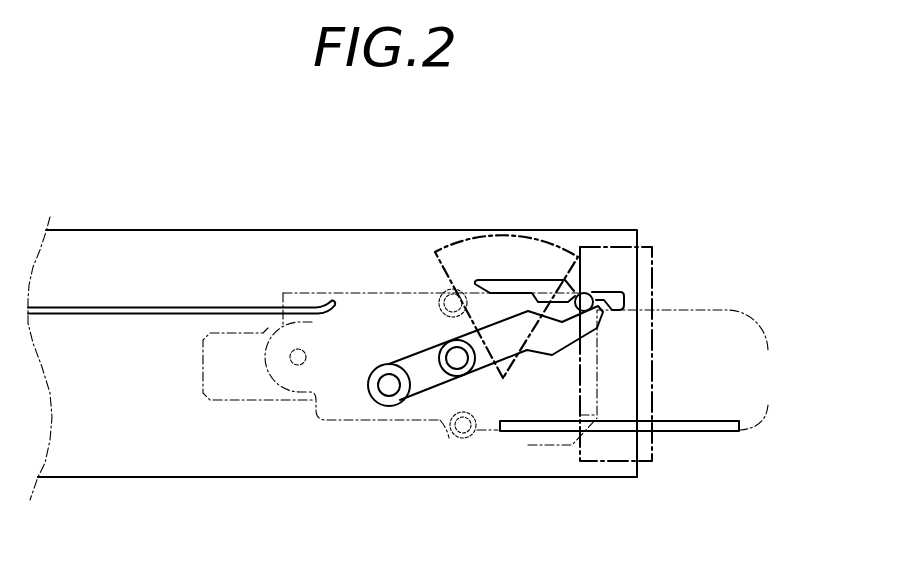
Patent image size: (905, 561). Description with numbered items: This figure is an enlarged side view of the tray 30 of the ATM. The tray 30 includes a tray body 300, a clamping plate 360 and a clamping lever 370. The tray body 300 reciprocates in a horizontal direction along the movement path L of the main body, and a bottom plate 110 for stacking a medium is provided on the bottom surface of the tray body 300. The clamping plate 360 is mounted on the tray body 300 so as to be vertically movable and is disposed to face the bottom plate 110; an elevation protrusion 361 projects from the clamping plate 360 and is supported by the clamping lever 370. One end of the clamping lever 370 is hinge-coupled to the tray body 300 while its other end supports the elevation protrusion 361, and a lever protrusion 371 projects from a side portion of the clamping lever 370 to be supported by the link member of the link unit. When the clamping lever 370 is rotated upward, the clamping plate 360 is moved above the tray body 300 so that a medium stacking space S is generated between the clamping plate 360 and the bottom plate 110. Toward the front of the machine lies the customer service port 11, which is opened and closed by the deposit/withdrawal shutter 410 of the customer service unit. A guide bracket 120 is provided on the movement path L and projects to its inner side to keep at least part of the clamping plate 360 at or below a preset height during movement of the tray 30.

The customer service port 11 is at (648, 247).
The tray 30 is at (276, 266).
The bottom plate 110 is at (718, 431).
The guide bracket 120 is at (133, 307).
The tray body 300 is at (365, 313).
The clamping plate 360 is at (537, 280).
The elevation protrusion 361 is at (585, 293).
The clamping lever 370 is at (418, 373).
The lever protrusion 371 is at (457, 360).
The deposit/withdrawal shutter 410 is at (512, 235).
The movement path L is at (130, 477).
The medium stacking space S is at (623, 392).